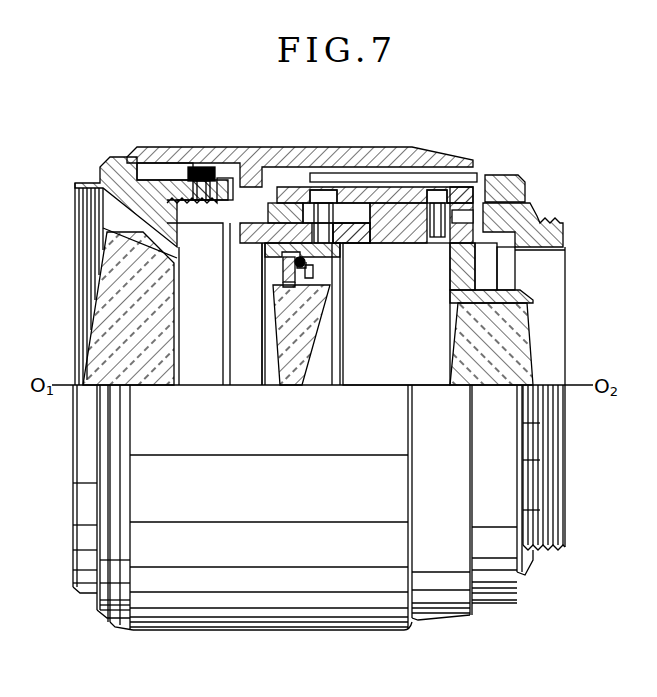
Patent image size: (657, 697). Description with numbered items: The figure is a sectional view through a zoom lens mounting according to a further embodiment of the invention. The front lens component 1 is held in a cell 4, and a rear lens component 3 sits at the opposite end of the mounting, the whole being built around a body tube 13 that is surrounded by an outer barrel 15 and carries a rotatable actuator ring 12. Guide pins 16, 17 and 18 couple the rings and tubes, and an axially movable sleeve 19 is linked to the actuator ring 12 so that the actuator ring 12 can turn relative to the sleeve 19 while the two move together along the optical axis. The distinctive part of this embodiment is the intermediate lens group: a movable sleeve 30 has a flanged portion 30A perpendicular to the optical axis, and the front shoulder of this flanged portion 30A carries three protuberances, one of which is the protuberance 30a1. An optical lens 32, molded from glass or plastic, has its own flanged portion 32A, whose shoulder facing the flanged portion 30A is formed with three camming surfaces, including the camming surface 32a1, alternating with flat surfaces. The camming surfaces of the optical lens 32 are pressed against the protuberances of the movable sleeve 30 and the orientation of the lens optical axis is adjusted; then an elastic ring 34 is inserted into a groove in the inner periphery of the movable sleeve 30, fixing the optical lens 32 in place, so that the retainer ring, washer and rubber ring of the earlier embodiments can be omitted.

The lens component 1 is at (148, 388).
The lens component 3 is at (498, 388).
The cell 4 is at (112, 192).
The actuator ring 12 is at (243, 160).
The body tube 13 is at (525, 216).
The outer barrel 15 is at (503, 186).
The guide pin 16 is at (321, 196).
The guide pin 17 is at (436, 195).
The guide pin 18 is at (200, 168).
The axially movable sleeve 19 is at (420, 243).
The movable sleeve 30 is at (262, 247).
The flanged portion 30A is at (340, 256).
The protuberance 30a1 is at (317, 270).
The optical lens 32 is at (303, 355).
The flanged portion 32A is at (225, 314).
The camming surface 32a1 is at (306, 283).
The elastic ring 34 is at (283, 270).